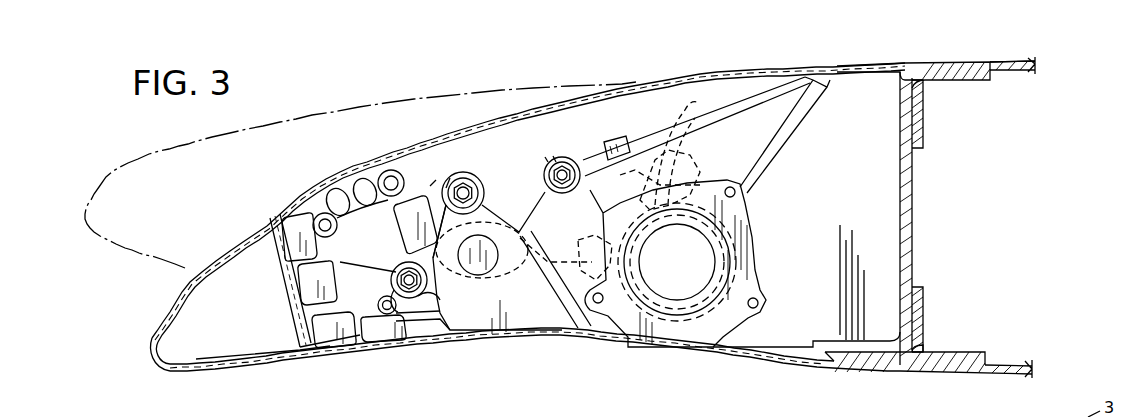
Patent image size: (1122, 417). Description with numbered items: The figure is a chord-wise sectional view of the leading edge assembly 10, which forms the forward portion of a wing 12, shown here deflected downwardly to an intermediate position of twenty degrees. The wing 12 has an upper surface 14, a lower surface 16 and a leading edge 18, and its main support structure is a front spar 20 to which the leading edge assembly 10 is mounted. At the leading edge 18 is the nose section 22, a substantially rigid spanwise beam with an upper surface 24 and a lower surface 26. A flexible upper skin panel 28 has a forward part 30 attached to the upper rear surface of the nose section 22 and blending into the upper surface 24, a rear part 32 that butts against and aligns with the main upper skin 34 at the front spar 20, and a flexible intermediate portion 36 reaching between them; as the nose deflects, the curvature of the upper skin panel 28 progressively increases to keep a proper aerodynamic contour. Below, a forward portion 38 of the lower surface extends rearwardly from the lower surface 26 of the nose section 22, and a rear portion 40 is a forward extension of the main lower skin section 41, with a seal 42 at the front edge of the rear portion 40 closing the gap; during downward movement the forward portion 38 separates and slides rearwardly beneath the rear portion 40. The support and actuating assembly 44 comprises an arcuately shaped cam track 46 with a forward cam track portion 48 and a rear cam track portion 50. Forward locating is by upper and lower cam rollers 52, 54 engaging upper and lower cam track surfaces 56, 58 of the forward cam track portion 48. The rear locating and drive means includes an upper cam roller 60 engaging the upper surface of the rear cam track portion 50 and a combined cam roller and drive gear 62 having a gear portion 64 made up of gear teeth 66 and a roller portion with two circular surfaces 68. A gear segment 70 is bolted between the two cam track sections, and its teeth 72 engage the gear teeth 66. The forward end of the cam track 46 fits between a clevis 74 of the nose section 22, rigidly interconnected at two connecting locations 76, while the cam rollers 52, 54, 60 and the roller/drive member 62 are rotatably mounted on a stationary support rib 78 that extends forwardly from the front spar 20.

The leading edge assembly 10 is at (397, 121).
The wing 12 is at (1000, 57).
The upper surface 14 is at (1024, 62).
The lower surface 16 is at (992, 377).
The leading edge 18 is at (152, 354).
The front spar 20 is at (915, 223).
The nose section 22 is at (197, 372).
The upper surface 24 is at (186, 276).
The lower surface 26 is at (250, 368).
The flexible upper skin panel 28 is at (398, 150).
The forward part 30 is at (300, 212).
The rear part 32 is at (850, 66).
The main upper skin 34 is at (932, 62).
The flexible intermediate portion 36 is at (547, 158).
The forward portion 38 is at (398, 336).
The rear portion 40 is at (536, 340).
The main lower skin section 41 is at (1010, 376).
The seal 42 is at (386, 315).
The support and actuating assembly 44 is at (530, 276).
The cam track 46 is at (630, 142).
The forward cam track portion 48 is at (430, 186).
The rear cam track portion 50 is at (604, 148).
The upper cam roller 52 is at (462, 172).
The lower cam roller 54 is at (391, 284).
The upper cam track surface 56 is at (446, 186).
The lower cam track surface 58 is at (390, 242).
The upper cam roller 60 is at (550, 160).
The combined cam roller and drive gear 62 is at (706, 348).
The gear portion 64 is at (632, 348).
The gear teeth 66 is at (692, 176).
The circular surfaces 68 is at (702, 320).
The gear segment 70 is at (625, 143).
The teeth 72 is at (690, 110).
The clevis 74 is at (352, 192).
The connecting locations 76 is at (382, 180).
The stationary support rib 78 is at (544, 165).